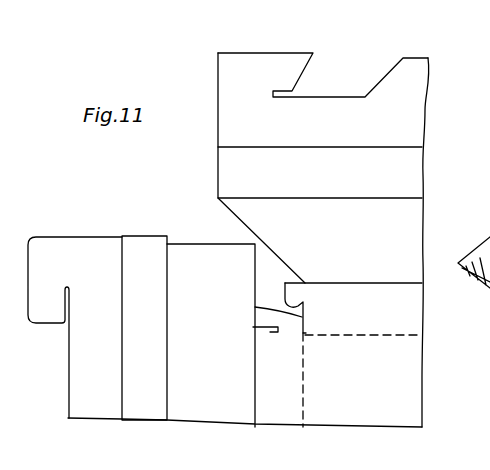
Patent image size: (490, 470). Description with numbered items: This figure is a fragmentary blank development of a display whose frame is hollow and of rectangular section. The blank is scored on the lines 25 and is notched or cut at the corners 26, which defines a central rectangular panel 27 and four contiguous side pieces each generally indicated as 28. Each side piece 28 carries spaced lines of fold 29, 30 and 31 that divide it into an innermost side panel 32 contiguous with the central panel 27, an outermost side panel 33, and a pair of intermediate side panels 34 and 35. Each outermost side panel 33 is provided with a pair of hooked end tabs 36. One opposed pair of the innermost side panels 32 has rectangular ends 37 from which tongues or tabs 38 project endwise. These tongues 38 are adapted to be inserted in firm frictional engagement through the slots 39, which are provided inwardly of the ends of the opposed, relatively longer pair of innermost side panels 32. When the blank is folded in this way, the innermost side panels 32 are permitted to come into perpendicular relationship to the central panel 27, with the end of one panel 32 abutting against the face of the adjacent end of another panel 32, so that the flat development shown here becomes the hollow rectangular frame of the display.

The score lines 25 is at (368, 337).
The corners 26 is at (262, 248).
The central rectangular panel 27 is at (400, 416).
The side pieces 28 is at (420, 56).
The line of fold 29 is at (392, 273).
The line of fold 30 is at (370, 205).
The line of fold 31 is at (385, 153).
The innermost side panel 32 is at (277, 443).
The outermost side panel 33 is at (418, 102).
The intermediate side panel 34 is at (408, 222).
The intermediate side panel 35 is at (420, 173).
The hooked end tab 36 is at (300, 62).
The rectangular end 37 is at (308, 323).
The tongue 38 is at (290, 291).
The slot 39 is at (266, 335).